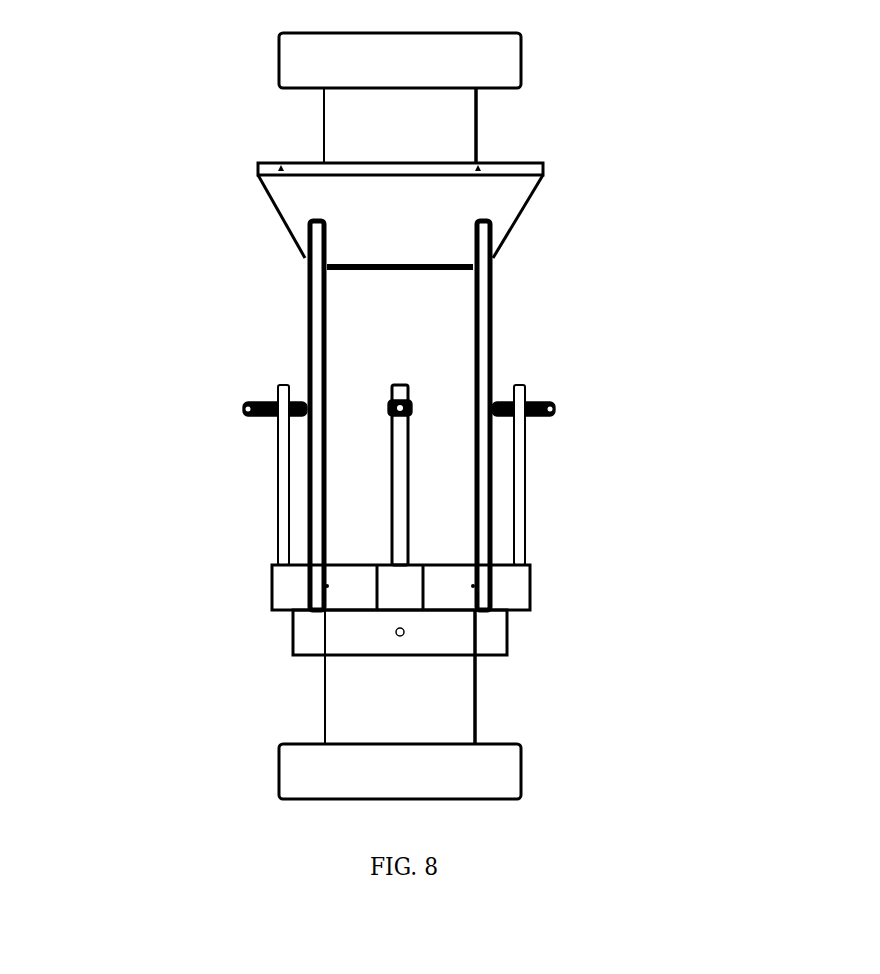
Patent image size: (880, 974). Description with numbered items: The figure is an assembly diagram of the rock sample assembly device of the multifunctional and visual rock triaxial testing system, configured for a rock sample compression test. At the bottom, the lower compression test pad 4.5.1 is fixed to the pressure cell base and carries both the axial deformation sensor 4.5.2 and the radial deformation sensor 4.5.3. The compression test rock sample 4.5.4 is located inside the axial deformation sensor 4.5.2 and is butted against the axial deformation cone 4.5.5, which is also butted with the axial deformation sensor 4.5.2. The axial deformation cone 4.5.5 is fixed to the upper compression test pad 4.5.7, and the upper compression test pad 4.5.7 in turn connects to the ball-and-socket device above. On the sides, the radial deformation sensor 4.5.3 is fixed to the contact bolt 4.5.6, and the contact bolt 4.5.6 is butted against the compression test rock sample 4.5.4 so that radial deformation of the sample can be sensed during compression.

The lower compression test pad 4.5.1 is at (396, 725).
The axial deformation sensor 4.5.2 is at (299, 530).
The radial deformation sensor 4.5.3 is at (262, 461).
The compression test rock sample 4.5.4 is at (453, 496).
The axial deformation cone 4.5.5 is at (281, 233).
The contact bolt 4.5.6 is at (579, 402).
The upper compression test pad 4.5.7 is at (450, 119).